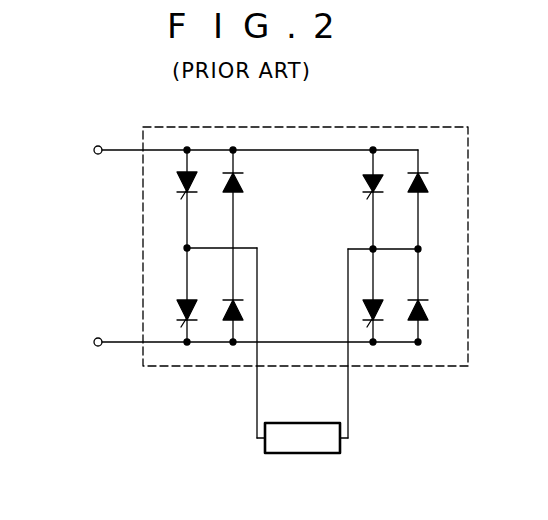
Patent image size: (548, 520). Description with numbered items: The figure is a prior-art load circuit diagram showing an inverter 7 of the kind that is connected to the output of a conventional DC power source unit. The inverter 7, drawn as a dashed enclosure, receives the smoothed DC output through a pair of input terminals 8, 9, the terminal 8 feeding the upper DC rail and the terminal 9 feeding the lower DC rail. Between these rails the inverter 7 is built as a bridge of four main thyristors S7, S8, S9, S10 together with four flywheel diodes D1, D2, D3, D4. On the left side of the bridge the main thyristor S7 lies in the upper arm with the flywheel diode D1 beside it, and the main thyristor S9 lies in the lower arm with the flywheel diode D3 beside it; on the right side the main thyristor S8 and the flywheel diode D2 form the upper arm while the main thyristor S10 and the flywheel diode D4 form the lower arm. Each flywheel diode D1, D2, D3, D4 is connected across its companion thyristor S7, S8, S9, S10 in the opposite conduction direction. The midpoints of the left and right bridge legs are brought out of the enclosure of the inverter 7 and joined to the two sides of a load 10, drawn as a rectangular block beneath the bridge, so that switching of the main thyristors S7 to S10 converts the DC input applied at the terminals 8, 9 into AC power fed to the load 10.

The inverter 7 is at (143, 232).
The inverter input terminal 8 is at (93, 150).
The inverter input terminal 9 is at (93, 342).
The load 10 is at (300, 435).
The main thyristor S7 is at (195, 178).
The main thyristor S8 is at (366, 183).
The main thyristor S9 is at (181, 308).
The main thyristor S10 is at (382, 309).
The flywheel diode D1 is at (238, 191).
The flywheel diode D2 is at (414, 193).
The flywheel diode D3 is at (227, 308).
The flywheel diode D4 is at (426, 309).